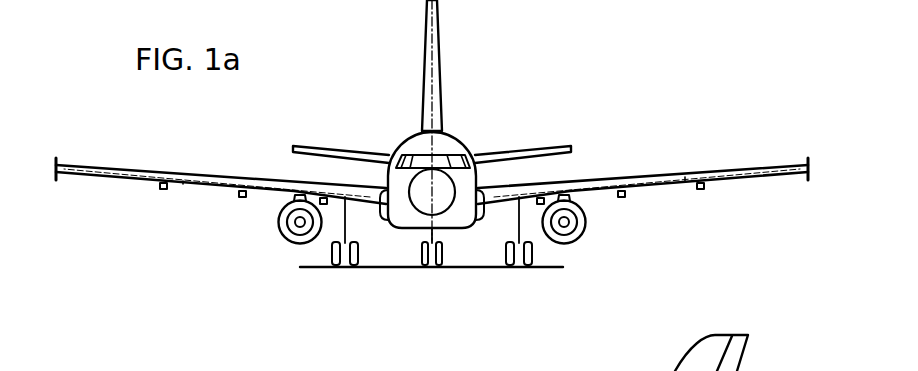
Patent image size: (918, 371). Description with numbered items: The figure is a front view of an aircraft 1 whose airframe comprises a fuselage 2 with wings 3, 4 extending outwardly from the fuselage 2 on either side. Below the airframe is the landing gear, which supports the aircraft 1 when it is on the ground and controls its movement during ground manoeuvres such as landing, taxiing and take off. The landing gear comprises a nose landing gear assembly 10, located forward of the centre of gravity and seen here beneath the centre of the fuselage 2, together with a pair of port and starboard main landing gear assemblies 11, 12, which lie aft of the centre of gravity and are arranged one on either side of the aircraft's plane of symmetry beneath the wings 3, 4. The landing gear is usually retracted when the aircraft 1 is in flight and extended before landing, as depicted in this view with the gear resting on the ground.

The aircraft 1 is at (582, 77).
The fuselage 2 is at (404, 137).
The wing 3 is at (126, 171).
The wing 4 is at (661, 177).
The nose landing gear assembly 10 is at (430, 273).
The main landing gear assembly 11 is at (520, 273).
The main landing gear assembly 12 is at (343, 273).